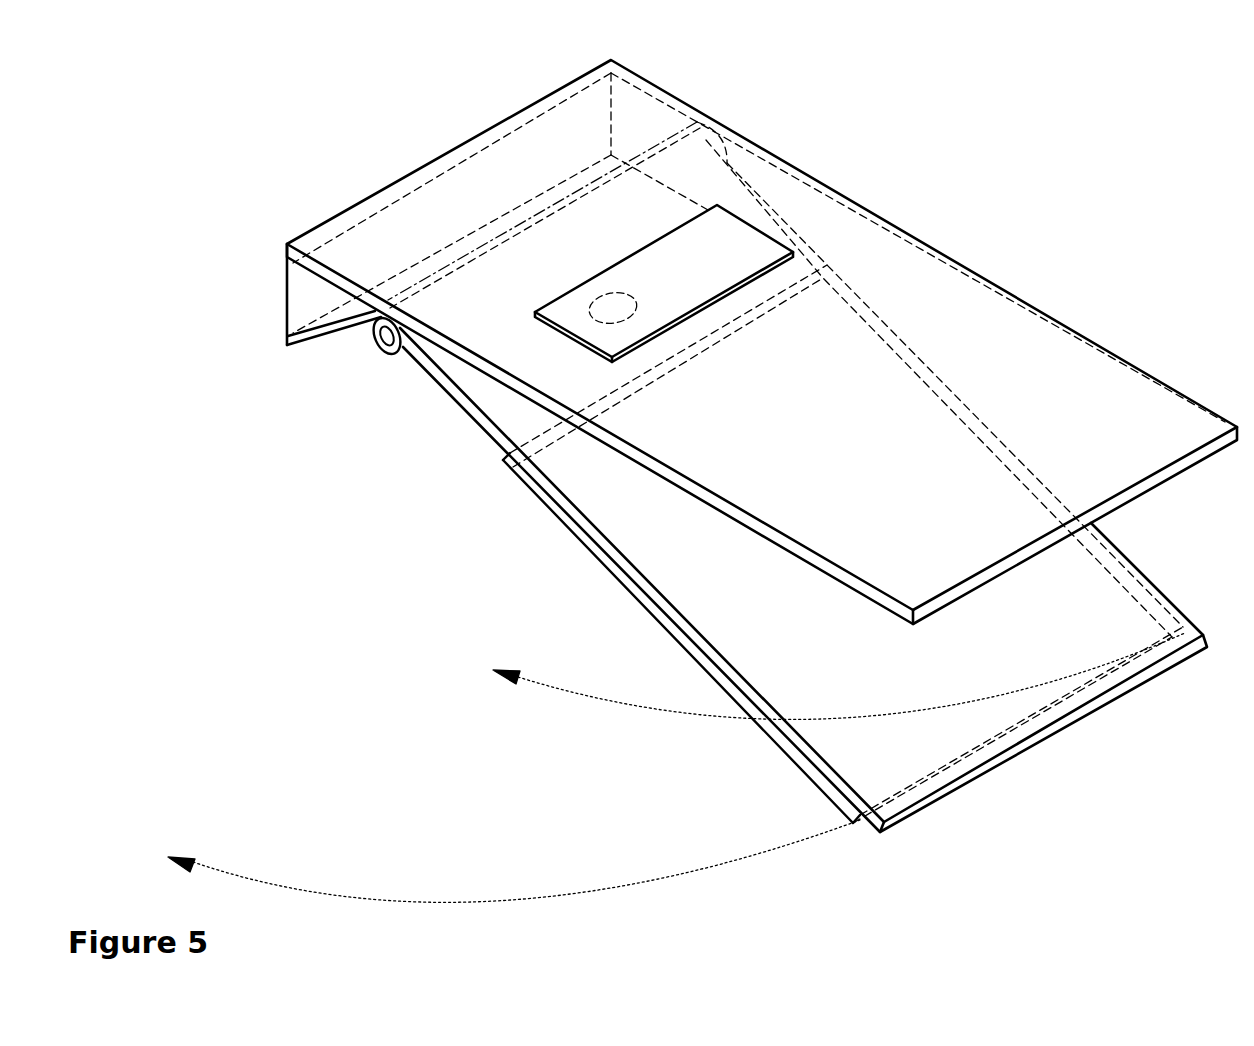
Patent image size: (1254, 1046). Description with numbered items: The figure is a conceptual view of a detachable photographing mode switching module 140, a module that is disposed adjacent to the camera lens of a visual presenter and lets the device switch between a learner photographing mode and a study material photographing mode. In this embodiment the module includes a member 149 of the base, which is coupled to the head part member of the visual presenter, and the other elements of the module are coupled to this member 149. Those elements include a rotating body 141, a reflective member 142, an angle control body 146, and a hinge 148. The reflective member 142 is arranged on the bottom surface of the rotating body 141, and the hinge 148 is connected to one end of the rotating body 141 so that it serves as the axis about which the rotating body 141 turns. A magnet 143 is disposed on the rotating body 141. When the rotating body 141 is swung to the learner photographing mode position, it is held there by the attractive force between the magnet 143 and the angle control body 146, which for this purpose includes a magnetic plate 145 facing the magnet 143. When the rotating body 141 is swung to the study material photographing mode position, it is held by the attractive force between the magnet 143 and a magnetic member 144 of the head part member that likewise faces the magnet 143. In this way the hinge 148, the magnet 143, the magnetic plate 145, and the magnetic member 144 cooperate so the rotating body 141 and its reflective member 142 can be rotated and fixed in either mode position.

The photographing mode switching module 140 is at (762, 332).
The rotating body 141 is at (1027, 745).
The reflective member 142 is at (567, 522).
The magnet 143 is at (617, 315).
The magnetic member 144 is at (735, 232).
The magnetic plate 145 is at (308, 346).
The angle control body 146 is at (293, 298).
The hinge 148 is at (378, 355).
The member of the base 149 is at (948, 287).